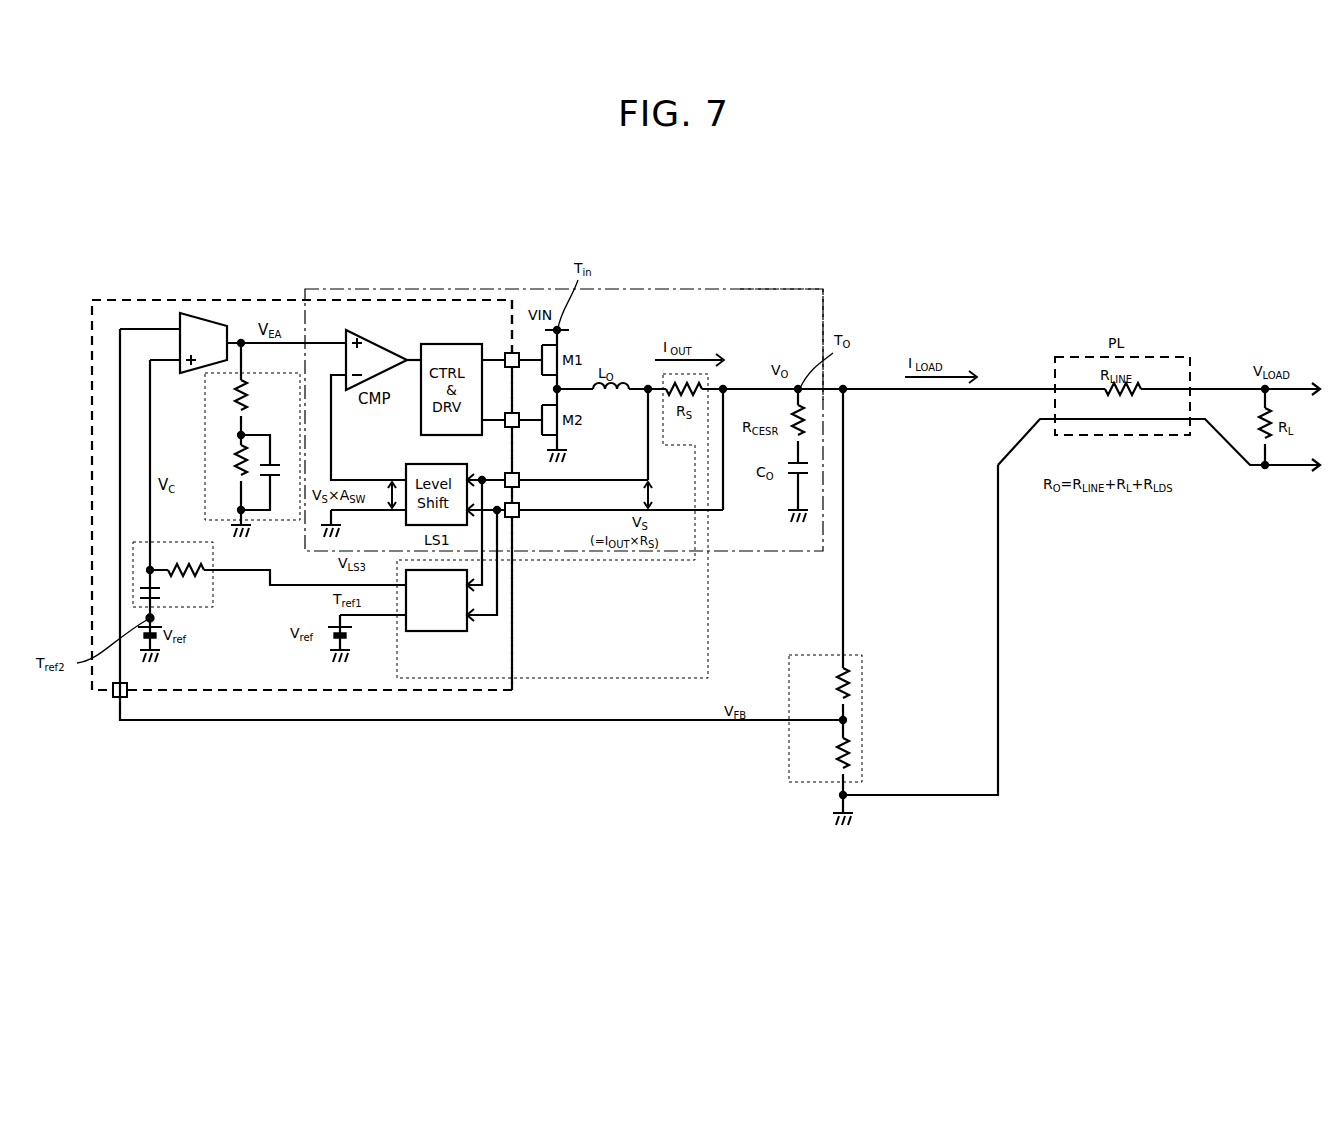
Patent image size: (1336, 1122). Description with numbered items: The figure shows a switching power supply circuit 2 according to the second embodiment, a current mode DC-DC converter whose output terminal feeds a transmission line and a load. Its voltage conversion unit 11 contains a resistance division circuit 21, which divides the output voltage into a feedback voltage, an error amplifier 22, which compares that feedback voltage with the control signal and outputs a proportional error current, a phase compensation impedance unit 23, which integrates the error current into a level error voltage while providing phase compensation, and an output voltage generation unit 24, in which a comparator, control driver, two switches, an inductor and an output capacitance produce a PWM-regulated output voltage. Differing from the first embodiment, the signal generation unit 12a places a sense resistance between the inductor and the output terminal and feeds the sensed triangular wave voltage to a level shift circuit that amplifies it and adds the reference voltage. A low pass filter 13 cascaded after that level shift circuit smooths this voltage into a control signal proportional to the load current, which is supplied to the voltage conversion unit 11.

The switching power supply circuit 2 is at (1093, 232).
The voltage conversion unit 11 is at (727, 276).
The error amplifier 22 is at (211, 323).
The phase compensation impedance unit 23 is at (268, 522).
The output voltage generation unit 24 is at (824, 300).
The low pass filter 13 is at (215, 596).
The signal generation unit 12a is at (709, 632).
The resistance division circuit 21 is at (789, 778).